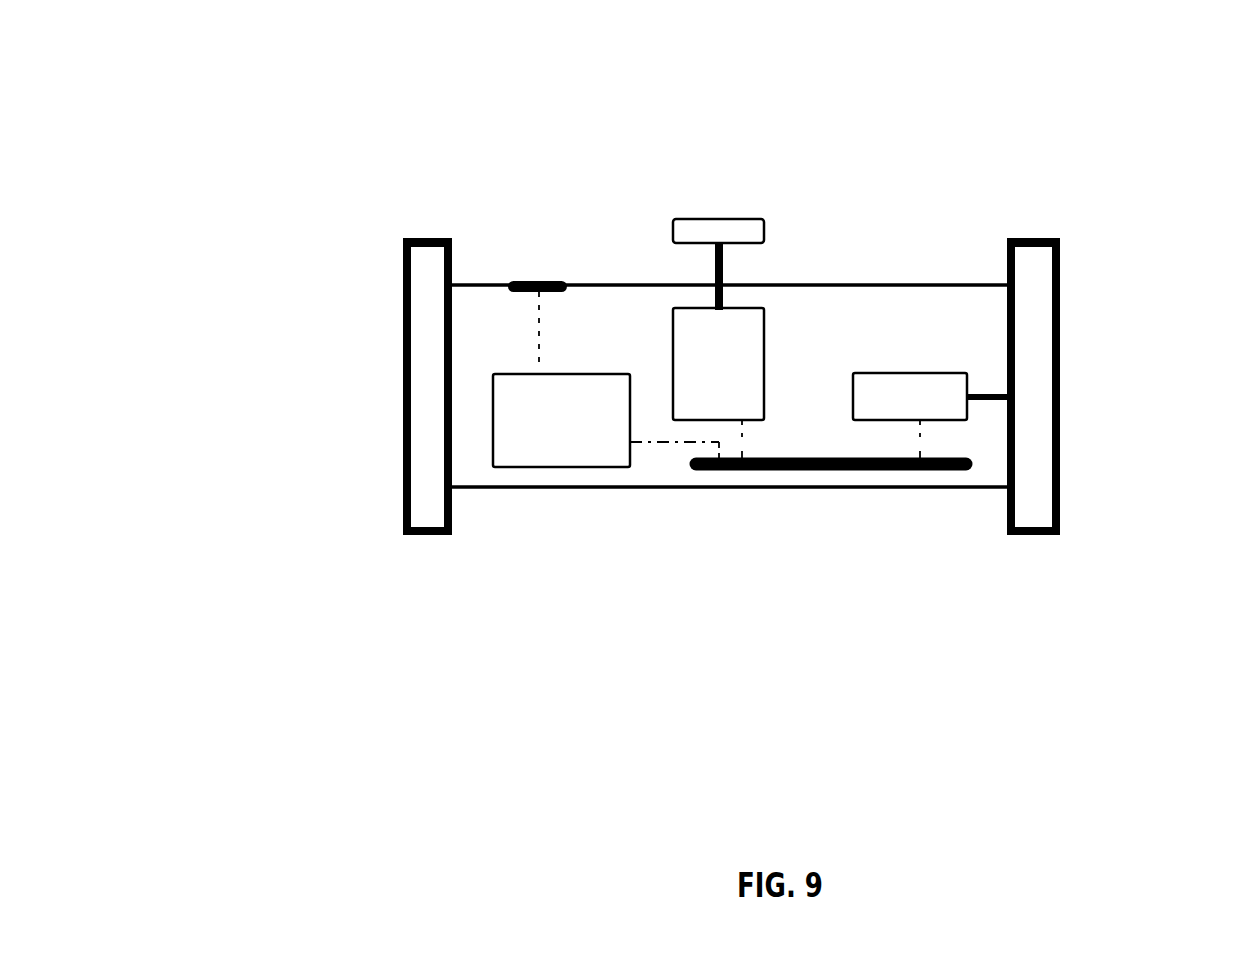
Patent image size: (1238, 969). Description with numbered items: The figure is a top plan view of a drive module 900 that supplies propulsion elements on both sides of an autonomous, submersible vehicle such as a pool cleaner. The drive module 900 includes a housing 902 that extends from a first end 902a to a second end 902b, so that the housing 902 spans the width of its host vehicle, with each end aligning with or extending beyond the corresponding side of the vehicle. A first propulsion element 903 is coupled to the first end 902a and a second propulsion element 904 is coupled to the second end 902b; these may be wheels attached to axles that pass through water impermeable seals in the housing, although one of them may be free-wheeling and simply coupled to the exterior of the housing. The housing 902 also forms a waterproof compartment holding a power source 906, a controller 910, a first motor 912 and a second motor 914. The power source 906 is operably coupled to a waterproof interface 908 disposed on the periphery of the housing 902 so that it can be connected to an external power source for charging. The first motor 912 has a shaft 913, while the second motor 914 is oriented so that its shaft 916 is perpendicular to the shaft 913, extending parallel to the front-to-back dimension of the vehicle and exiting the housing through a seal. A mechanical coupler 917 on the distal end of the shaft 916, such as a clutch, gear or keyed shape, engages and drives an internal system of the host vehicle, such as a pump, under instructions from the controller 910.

The drive module 900 is at (216, 382).
The housing 902 is at (718, 489).
The first end 902a is at (444, 448).
The second end 902b is at (1016, 478).
The first propulsion element 903 is at (402, 357).
The second propulsion element 904 is at (1077, 440).
The power source 906 is at (560, 468).
The waterproof interface 908 is at (527, 278).
The controller 910 is at (883, 478).
The first motor 912 is at (901, 372).
The shaft 913 is at (975, 390).
The second motor 914 is at (672, 350).
The shaft 916 is at (723, 272).
The mechanical coupler 917 is at (720, 217).